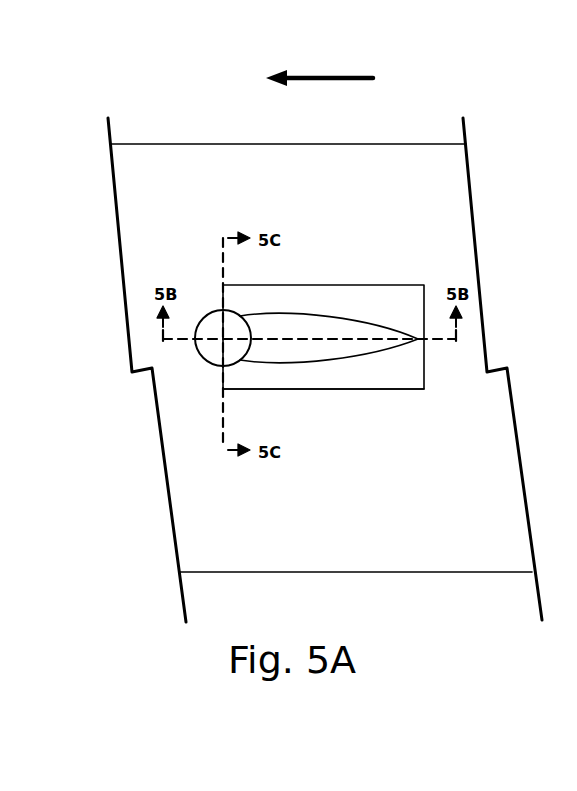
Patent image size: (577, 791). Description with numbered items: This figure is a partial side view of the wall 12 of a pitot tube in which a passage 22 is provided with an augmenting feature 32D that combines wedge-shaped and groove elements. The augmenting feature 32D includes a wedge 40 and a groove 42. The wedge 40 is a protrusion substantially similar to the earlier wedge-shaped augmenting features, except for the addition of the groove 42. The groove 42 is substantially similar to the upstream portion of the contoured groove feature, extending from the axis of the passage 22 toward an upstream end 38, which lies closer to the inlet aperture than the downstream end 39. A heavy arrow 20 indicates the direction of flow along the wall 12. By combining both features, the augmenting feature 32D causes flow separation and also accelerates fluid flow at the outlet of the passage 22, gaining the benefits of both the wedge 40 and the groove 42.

The wall 12 is at (156, 128).
The machine direction 20 is at (312, 74).
The passage 22 is at (216, 330).
The augmenting feature 32D is at (362, 412).
The upstream end 38 is at (429, 349).
The downstream end 39 is at (212, 284).
The wedge 40 is at (332, 300).
The groove 42 is at (296, 362).